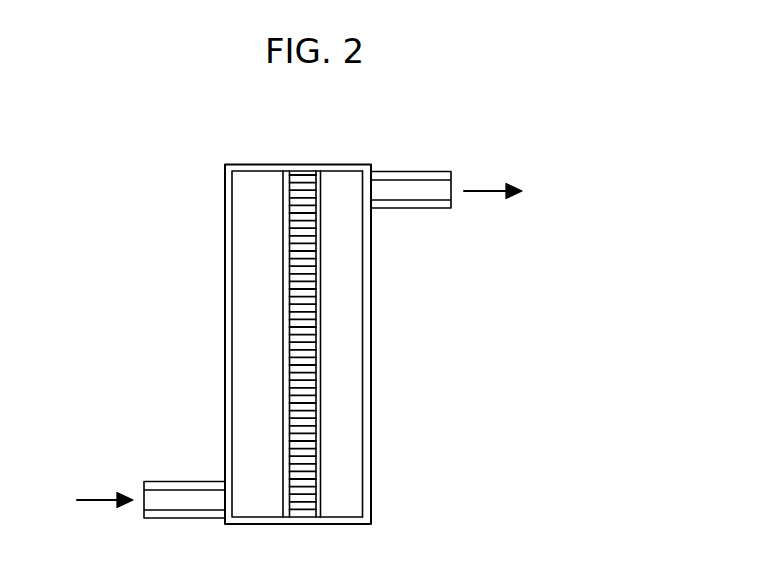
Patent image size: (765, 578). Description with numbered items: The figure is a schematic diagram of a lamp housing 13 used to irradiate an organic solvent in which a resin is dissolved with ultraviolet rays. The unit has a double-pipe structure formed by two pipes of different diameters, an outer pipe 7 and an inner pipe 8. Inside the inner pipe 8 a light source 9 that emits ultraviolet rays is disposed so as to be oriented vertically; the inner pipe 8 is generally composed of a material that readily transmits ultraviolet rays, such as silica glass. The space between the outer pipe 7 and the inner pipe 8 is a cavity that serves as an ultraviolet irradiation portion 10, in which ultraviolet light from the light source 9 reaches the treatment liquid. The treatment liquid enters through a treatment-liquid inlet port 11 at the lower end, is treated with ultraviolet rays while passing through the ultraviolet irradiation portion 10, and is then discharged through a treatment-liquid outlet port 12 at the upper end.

The outer pipe 7 is at (225, 328).
The inner pipe 8 is at (322, 407).
The light source 9 is at (303, 450).
The ultraviolet irradiation portion 10 is at (350, 315).
The treatment-liquid inlet port 11 is at (143, 491).
The treatment-liquid outlet port 12 is at (452, 183).
The lamp housing 13 is at (318, 131).